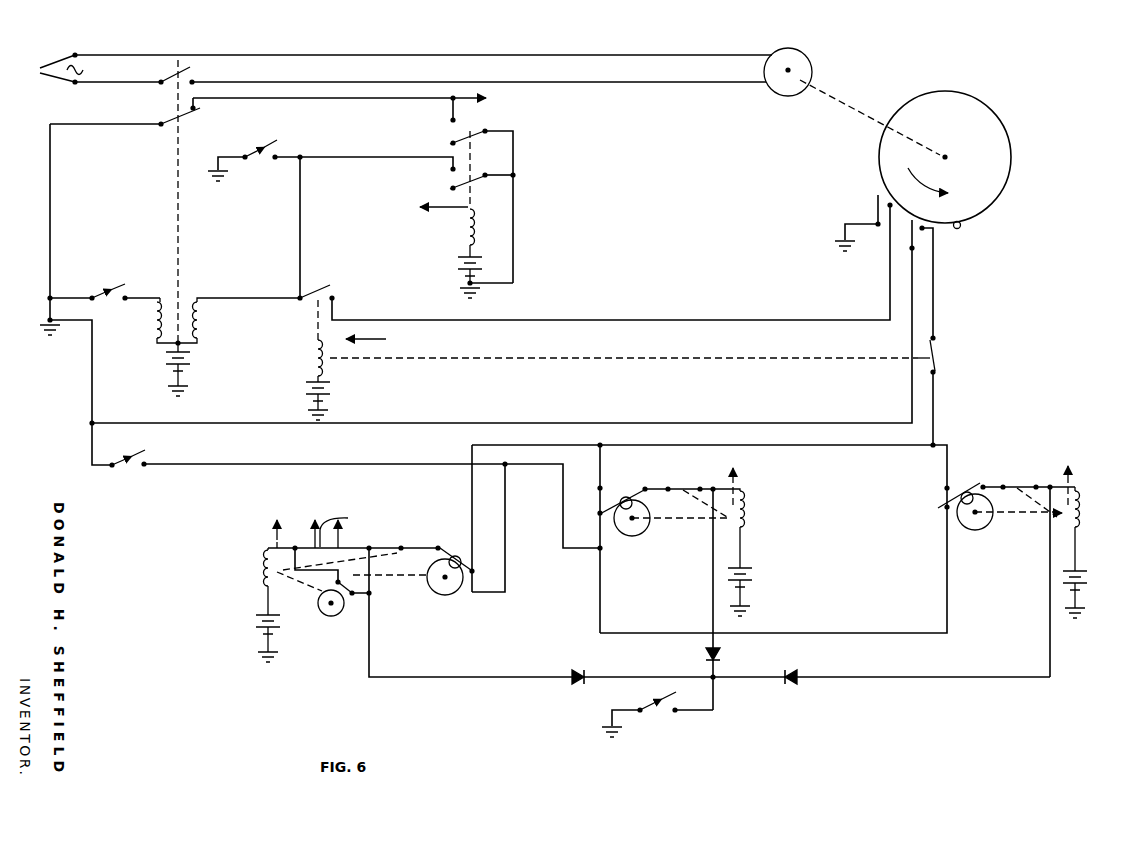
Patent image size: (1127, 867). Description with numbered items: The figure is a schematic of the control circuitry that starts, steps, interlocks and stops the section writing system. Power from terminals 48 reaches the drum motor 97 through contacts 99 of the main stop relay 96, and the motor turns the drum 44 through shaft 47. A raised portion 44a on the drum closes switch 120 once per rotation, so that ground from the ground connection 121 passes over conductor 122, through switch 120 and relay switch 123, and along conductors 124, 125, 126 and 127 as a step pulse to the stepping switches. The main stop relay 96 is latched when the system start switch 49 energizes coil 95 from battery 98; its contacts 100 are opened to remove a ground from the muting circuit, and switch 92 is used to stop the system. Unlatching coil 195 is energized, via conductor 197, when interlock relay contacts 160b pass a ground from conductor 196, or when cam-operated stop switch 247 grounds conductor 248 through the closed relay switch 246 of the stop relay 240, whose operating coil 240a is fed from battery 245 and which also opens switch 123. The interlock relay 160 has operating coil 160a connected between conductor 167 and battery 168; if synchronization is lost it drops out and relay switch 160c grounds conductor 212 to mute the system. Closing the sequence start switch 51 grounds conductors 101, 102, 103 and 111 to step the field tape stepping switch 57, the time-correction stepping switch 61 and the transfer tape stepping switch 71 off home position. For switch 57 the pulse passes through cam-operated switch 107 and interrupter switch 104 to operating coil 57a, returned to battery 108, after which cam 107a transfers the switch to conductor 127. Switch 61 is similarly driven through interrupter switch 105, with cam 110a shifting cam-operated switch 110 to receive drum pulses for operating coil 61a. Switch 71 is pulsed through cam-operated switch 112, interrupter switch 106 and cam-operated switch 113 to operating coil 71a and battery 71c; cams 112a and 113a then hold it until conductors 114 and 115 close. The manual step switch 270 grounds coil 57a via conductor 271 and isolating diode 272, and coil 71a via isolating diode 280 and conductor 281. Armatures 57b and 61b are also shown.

The terminals 48 is at (393, 68).
The contacts 99 is at (186, 74).
The conductor 212 is at (338, 95).
The drum motor 97 is at (811, 70).
The shaft 47 is at (840, 97).
The drum 44 is at (1010, 148).
The raised portion 44a is at (962, 224).
The contacts 100 is at (182, 119).
The switch 92 is at (268, 152).
The conductor 197 is at (378, 155).
The relay switch 160c is at (447, 130).
The relay contacts 160b is at (450, 181).
The conductor 196 is at (512, 190).
The conductor 167 is at (430, 206).
The operating coil 160a is at (466, 233).
The interlock relay 160 is at (470, 200).
The battery 168 is at (458, 275).
The cam-operated stop switch 247 is at (877, 216).
The switch 120 is at (932, 233).
The coil 195 is at (190, 305).
The system start switch 49 is at (105, 305).
The ground connection 121 is at (45, 322).
The coil 95 is at (152, 322).
The battery 98 is at (165, 365).
The main stop relay 96 is at (175, 318).
The relay switch 246 is at (326, 283).
The conductor 248 is at (645, 318).
The operating coil 240a is at (312, 357).
The battery 245 is at (308, 402).
The stop relay 240 is at (586, 342).
The relay switch 123 is at (937, 357).
The conductor 122 is at (627, 422).
The conductor 124 is at (936, 414).
The conductor 126 is at (700, 445).
The conductor 101 is at (343, 464).
The sequence start switch 51 is at (143, 407).
The conductor 102 is at (533, 465).
The conductor 111 is at (506, 560).
The conductor 127 is at (588, 539).
The transfer tape stepping switch 71 is at (238, 582).
The operating coil 71a is at (262, 572).
The battery 71c is at (287, 594).
The conductor 114 is at (335, 524).
The conductor 115 is at (340, 543).
The interrupter switch 106 is at (398, 543).
The cam-operated switch 112 is at (457, 550).
The cam 112a is at (451, 588).
The cam-operated switch 113 is at (348, 600).
The cam 113a is at (323, 614).
The conductor 281 is at (403, 676).
The isolating diode 280 is at (582, 673).
The conductor 103 is at (862, 636).
The isolating diode 272 is at (721, 654).
The manual step switch 270 is at (660, 714).
The field tape stepping switch 57 is at (714, 534).
The cam-operated switch 107 is at (657, 492).
The interrupter switch 104 is at (676, 488).
The cam 107a is at (634, 527).
The FTSS relay armature 57b is at (714, 482).
The operating coil 57a is at (748, 520).
The battery 108 is at (750, 586).
The conductor 271 is at (711, 560).
The time-correction stepping switch 61 is at (1005, 543).
The conductor 125 is at (946, 466).
The cam-operated switch 110 is at (1006, 483).
The interrupter switch 105 is at (1002, 485).
The cam 110a is at (977, 523).
The TCSS relay armature 61b is at (1069, 485).
The operating coil 61a is at (1085, 515).